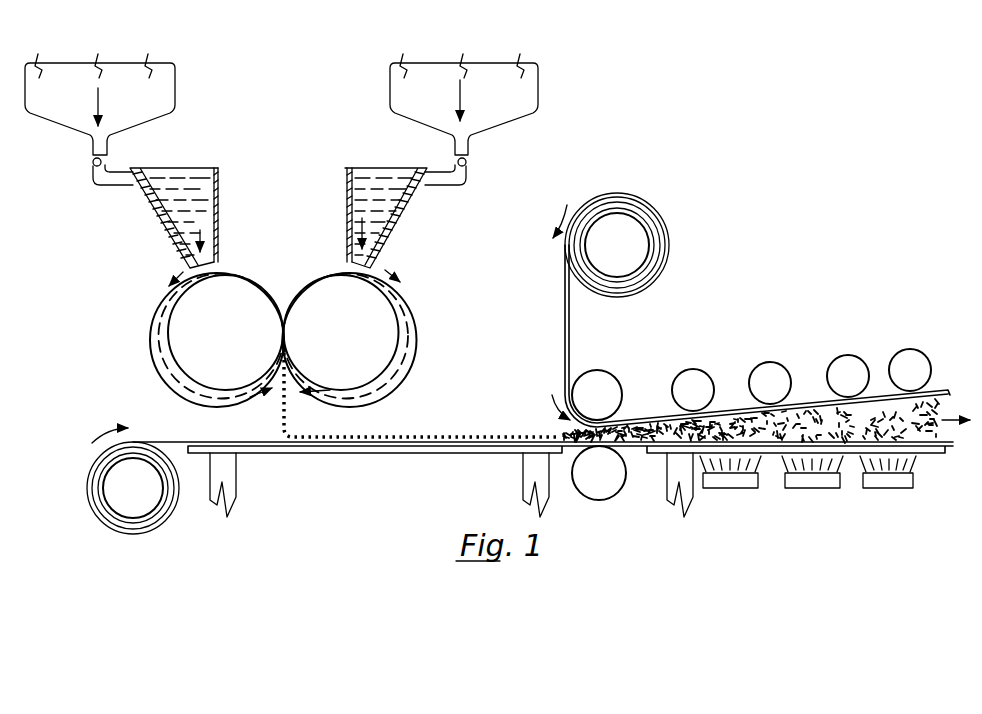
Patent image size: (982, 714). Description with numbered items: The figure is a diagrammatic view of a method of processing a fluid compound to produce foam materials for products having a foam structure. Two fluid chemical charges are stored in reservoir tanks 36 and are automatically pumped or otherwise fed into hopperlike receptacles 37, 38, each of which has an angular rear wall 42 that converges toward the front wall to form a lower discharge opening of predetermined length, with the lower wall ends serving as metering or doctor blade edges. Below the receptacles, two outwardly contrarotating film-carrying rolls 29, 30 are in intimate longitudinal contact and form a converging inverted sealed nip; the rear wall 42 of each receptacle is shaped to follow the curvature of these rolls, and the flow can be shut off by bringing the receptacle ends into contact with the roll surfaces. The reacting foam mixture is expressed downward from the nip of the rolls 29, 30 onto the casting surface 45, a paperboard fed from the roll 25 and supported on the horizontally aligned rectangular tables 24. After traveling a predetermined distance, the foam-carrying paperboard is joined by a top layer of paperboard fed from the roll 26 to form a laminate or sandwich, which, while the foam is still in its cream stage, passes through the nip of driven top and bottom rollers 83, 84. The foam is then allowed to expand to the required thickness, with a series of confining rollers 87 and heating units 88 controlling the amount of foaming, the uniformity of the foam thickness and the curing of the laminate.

The rectangular-shaped table 24 is at (372, 455).
The roll of paperboard 25 is at (133, 481).
The roll of top paperboard 26 is at (751, 310).
The contrarotating film-carrying roll 29 is at (217, 339).
The contrarotating film-carrying roll 30 is at (350, 338).
The reservoir tank 36 is at (281, 119).
The receptacle 37 is at (190, 185).
The receptacle 38 is at (367, 185).
The angular rear wall 42 is at (219, 258).
The casting surface 45 is at (183, 441).
The top roller 83 is at (608, 396).
The bottom roller 84 is at (603, 476).
The confining rollers 87 is at (845, 370).
The heating units 88 is at (886, 481).